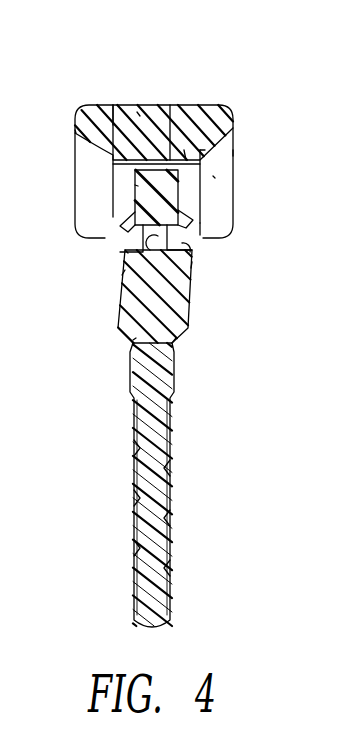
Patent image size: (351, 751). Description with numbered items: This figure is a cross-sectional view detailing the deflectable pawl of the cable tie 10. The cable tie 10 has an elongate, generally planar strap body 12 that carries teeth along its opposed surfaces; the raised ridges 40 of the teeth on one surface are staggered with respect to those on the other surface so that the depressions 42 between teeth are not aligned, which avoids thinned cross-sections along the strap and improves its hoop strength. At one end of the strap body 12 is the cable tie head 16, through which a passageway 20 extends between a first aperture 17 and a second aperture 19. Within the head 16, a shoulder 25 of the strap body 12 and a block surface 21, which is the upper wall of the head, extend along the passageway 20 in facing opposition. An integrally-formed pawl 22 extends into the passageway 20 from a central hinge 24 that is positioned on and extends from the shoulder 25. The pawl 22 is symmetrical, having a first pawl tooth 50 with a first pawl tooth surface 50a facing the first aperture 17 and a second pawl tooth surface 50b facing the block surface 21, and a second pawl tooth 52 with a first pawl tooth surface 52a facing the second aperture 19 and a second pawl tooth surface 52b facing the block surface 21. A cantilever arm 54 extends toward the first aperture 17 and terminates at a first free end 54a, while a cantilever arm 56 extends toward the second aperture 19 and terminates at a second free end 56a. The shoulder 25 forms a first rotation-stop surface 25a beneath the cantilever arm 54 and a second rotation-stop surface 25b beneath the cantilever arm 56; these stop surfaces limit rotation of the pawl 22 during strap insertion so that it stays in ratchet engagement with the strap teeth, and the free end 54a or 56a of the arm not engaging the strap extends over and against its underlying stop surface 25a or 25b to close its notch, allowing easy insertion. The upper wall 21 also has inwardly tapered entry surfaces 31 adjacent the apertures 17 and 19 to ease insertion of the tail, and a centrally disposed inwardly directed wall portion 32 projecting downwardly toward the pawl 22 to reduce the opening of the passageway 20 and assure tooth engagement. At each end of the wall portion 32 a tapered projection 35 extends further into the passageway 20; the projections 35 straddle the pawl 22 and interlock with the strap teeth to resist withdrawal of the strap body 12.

The cable tie 10 is at (188, 339).
The cable tie strap body 12 is at (152, 410).
The cable tie head 16 is at (200, 235).
The first aperture 17 is at (113, 152).
The second aperture 19 is at (234, 152).
The passageway 20 is at (215, 178).
The block surface 21 is at (112, 106).
The pawl 22 is at (128, 255).
The central hinge 24 is at (152, 292).
The shoulder 25 is at (135, 337).
The first rotation-stop surface 25a is at (192, 265).
The second rotation-stop surface 25b is at (124, 272).
The inwardly tapered entry surfaces 31 is at (76, 120).
The inwardly directed wall portion 32 is at (170, 105).
The tapered projection 35 is at (77, 132).
The raised ridges 40 is at (136, 510).
The depressions 42 is at (134, 529).
The first pawl tooth 50 is at (120, 188).
The first pawl tooth surface 50a is at (138, 185).
The second pawl tooth surface 50b is at (137, 112).
The second pawl tooth 52 is at (180, 197).
The first pawl tooth surface 52a is at (205, 150).
The second pawl tooth surface 52b is at (186, 160).
The cantilever arm 54 is at (128, 213).
The first free end 54a is at (122, 240).
The cantilever arm 56 is at (190, 228).
The second free end 56a is at (200, 246).